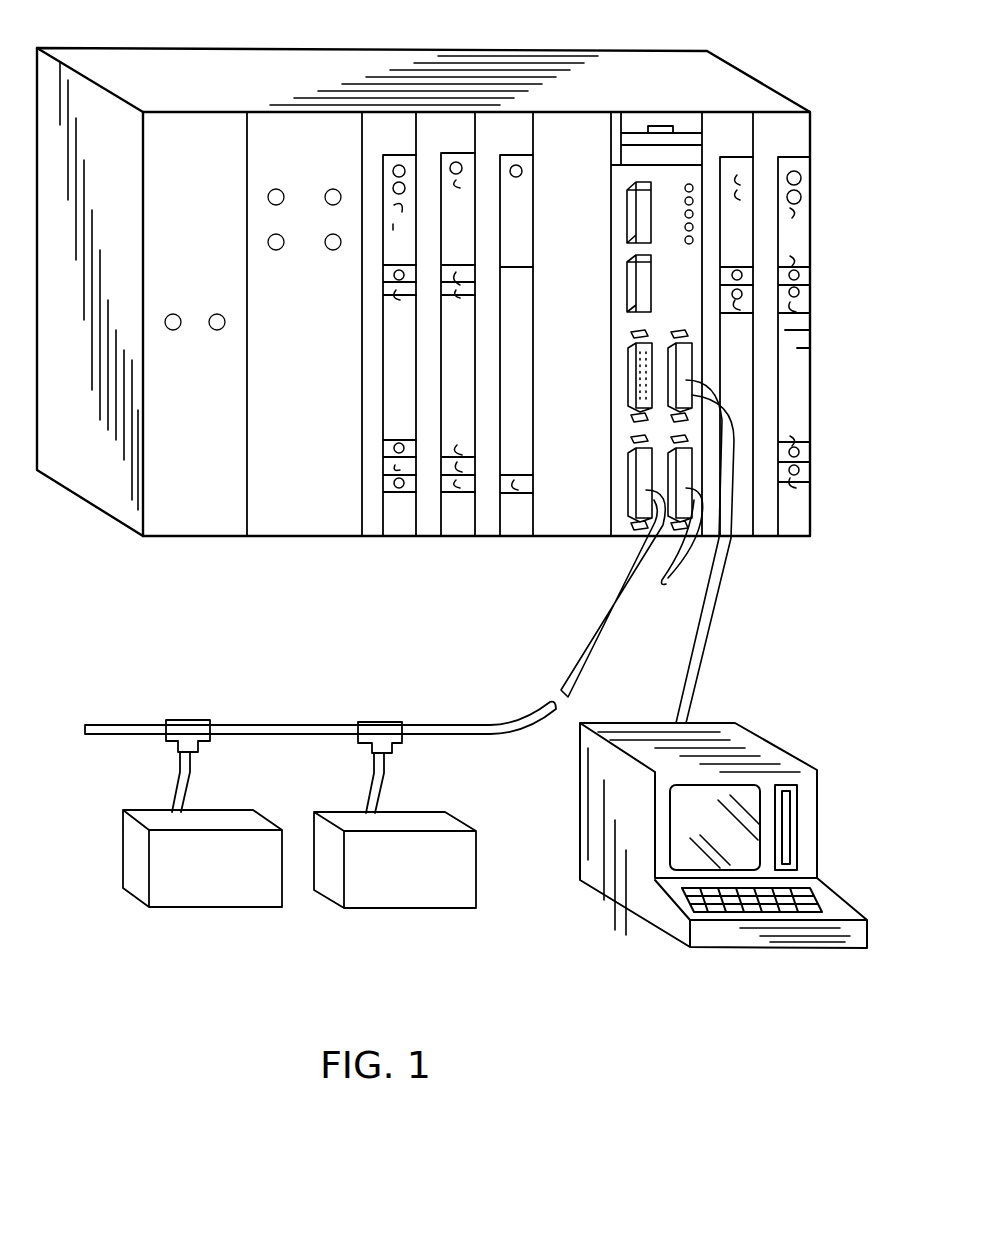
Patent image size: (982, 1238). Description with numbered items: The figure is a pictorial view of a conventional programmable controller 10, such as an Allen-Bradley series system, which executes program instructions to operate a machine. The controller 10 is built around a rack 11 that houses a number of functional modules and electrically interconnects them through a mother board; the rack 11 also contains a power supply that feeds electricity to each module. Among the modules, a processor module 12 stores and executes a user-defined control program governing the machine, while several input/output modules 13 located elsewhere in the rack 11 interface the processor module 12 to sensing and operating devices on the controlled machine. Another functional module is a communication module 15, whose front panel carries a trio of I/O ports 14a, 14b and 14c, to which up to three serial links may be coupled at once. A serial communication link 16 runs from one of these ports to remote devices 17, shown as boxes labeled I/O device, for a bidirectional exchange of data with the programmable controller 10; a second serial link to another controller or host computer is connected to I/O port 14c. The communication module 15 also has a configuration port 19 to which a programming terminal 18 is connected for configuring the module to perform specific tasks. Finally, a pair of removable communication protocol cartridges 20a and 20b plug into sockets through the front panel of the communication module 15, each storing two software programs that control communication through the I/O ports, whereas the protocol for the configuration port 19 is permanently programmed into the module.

The programmable controller 10 is at (287, 44).
The rack 11 is at (104, 496).
The processor module 12 is at (313, 532).
The input/output (I/O) modules 13 is at (400, 537).
The I/O port 14a is at (630, 382).
The I/O port 14b is at (630, 478).
The I/O port 14c is at (706, 560).
The communication module 15 is at (623, 534).
The serial communication link 16 is at (590, 646).
The remote devices 17 is at (247, 903).
The programming terminal 18 is at (596, 782).
The configuration port 19 is at (694, 345).
The communication protocol cartridge 20a is at (627, 213).
The communication protocol cartridge 20b is at (627, 283).